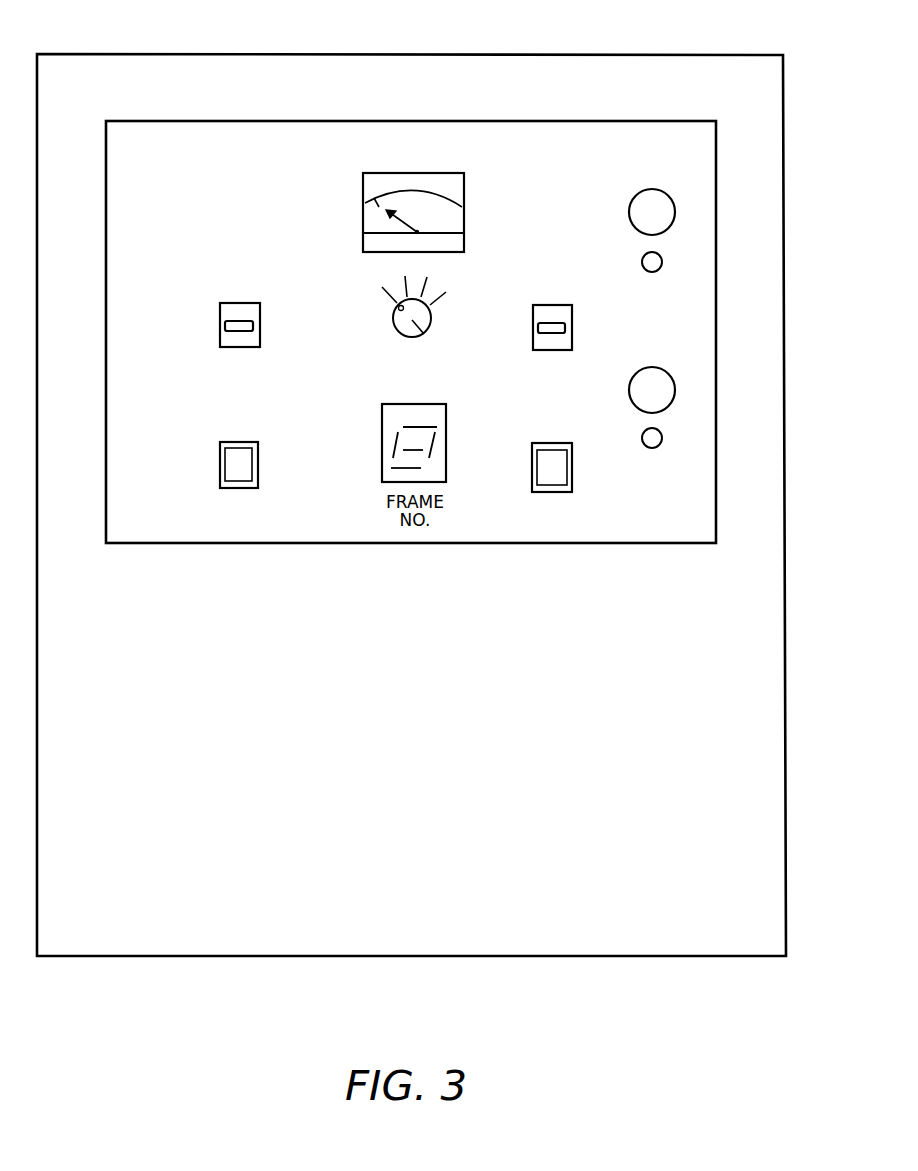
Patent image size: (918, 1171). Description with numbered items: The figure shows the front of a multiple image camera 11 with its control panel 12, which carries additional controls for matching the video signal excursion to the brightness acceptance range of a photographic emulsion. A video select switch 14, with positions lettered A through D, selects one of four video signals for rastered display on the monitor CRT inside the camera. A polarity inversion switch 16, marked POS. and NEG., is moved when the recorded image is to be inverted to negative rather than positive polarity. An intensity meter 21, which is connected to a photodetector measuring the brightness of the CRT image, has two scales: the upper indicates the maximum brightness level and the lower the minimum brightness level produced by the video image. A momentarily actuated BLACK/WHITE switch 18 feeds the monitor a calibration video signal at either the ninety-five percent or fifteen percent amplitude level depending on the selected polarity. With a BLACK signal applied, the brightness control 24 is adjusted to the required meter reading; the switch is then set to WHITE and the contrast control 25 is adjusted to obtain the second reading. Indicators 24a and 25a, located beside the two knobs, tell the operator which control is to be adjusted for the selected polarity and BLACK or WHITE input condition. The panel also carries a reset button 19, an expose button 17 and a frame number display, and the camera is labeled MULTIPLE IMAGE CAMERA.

The multiple image camera 11 is at (650, 54).
The control panel 12 is at (430, 121).
The video select switch 14 is at (426, 334).
The polarity inversion switch 16 is at (225, 327).
The expose button 17 is at (572, 487).
The BLACK/WHITE switch 18 is at (565, 328).
The reset button 19 is at (222, 472).
The intensity meter 21 is at (465, 210).
The brightness control 24 is at (640, 213).
The indicator 24a is at (646, 262).
The contrast control 25 is at (667, 392).
The indicator 25a is at (656, 446).